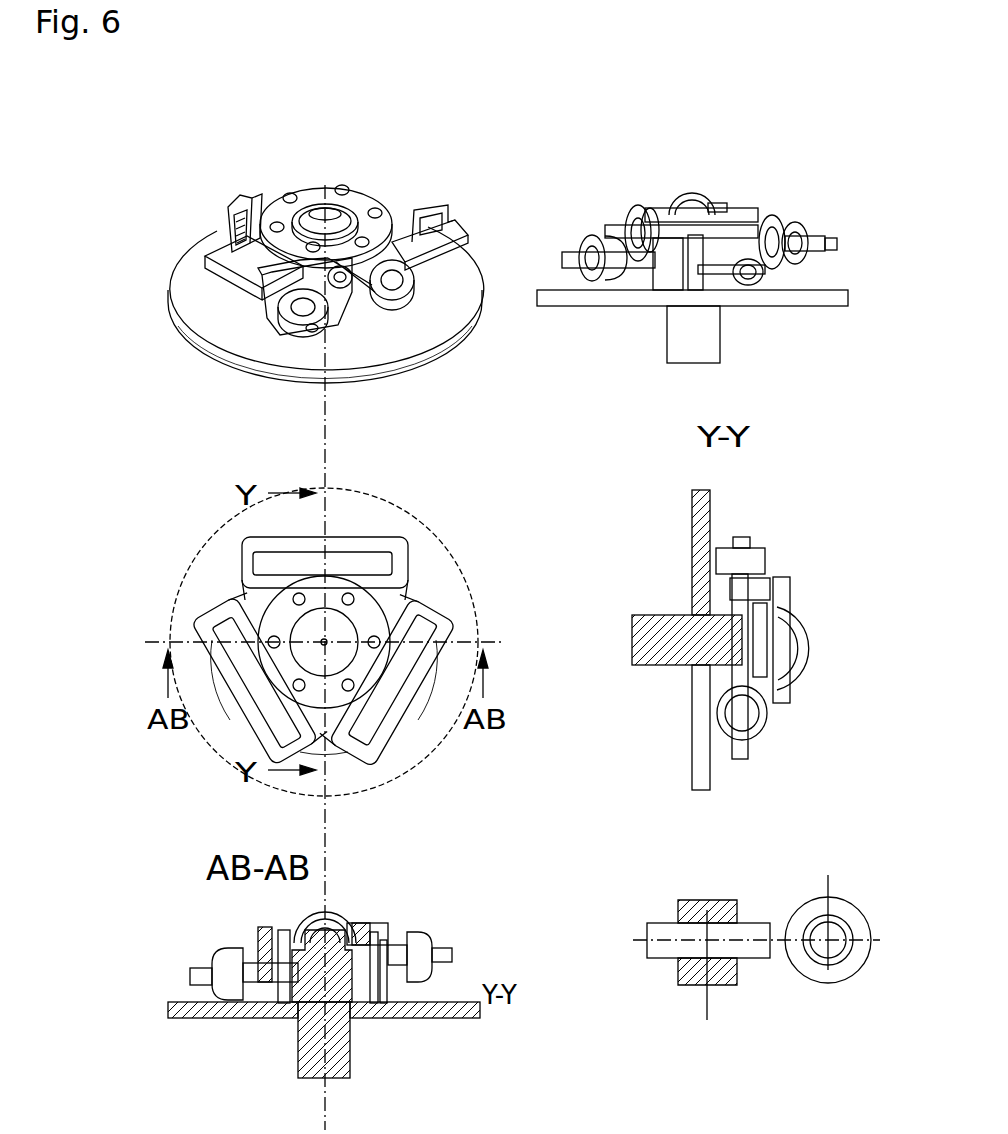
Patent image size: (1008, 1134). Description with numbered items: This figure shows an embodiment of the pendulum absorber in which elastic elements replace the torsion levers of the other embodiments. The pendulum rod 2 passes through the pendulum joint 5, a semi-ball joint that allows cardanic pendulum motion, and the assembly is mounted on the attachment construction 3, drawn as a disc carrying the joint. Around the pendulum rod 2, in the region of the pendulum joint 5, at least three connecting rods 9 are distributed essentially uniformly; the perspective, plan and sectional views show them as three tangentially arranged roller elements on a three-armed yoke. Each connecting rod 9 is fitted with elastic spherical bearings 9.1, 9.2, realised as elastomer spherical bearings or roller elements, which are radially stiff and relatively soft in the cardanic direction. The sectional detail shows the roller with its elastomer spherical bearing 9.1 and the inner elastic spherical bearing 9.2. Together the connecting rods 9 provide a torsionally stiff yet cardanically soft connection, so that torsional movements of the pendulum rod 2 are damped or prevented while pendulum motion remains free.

The pendulum rod 2 is at (705, 338).
The attachment construction 3 is at (250, 352).
The pendulum joint 5 is at (346, 203).
The connecting rods 9 is at (238, 194).
The elastomer spherical bearing 9.1 is at (775, 262).
The elastic spherical bearing 9.2 is at (690, 963).